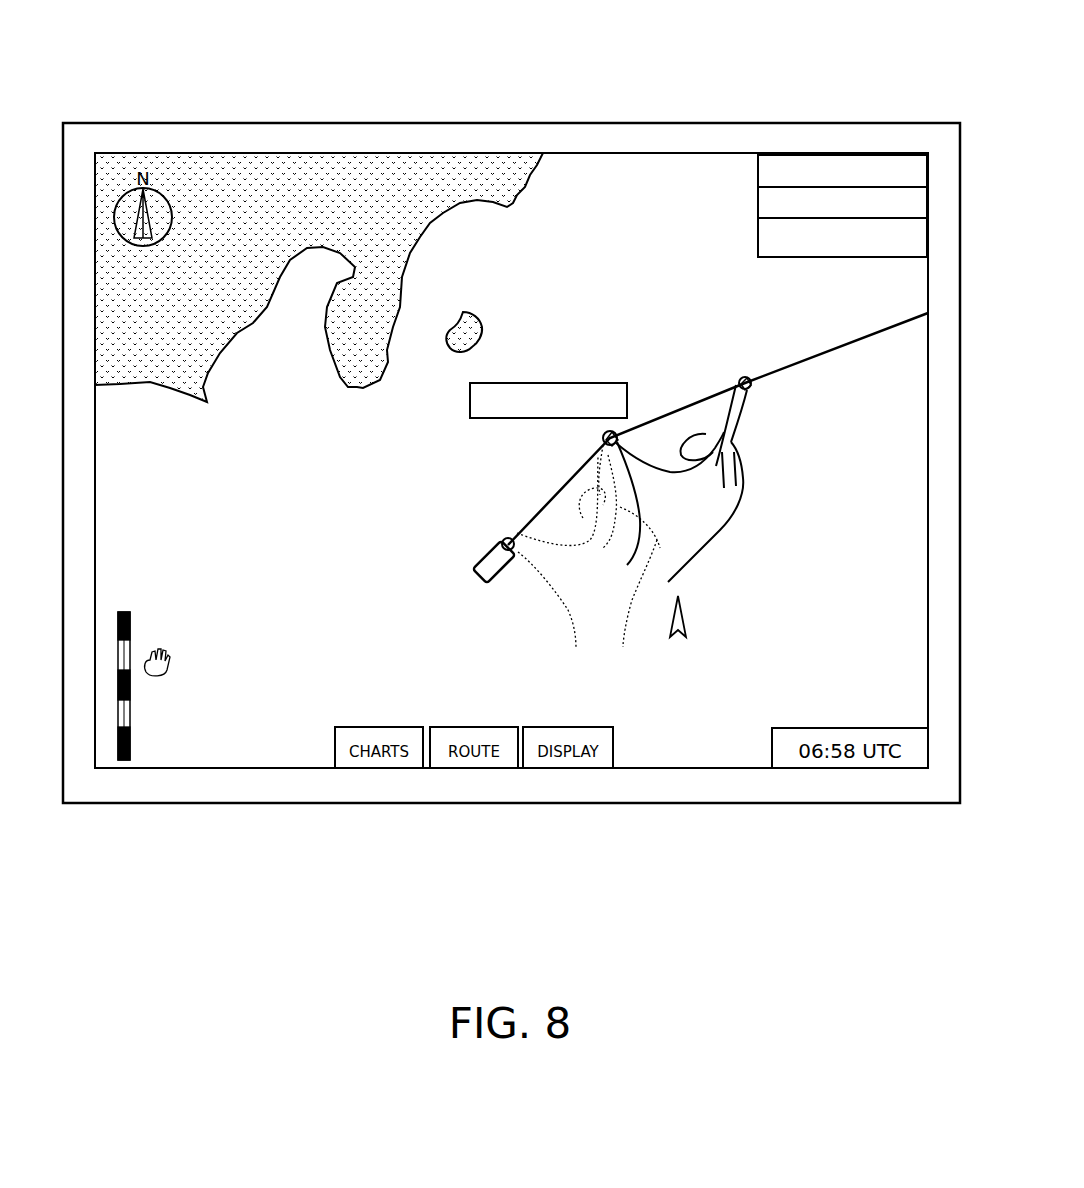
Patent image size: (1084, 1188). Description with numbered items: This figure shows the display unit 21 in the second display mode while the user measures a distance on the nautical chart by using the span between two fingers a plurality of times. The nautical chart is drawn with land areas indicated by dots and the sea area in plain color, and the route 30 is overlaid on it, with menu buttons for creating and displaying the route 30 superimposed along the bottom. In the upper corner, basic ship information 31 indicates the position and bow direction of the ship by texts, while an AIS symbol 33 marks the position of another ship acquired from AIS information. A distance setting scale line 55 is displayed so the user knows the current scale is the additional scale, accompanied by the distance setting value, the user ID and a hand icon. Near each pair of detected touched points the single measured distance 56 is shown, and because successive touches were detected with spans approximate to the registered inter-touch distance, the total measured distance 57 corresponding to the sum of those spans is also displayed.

The display unit 21 is at (90, 112).
The basic ship information 31 is at (830, 165).
The total measured distance 57 is at (556, 383).
The single measured distance 56 is at (673, 380).
The route 30 is at (842, 352).
The AIS symbol 33 is at (677, 642).
The distance setting scale line 55 is at (130, 725).